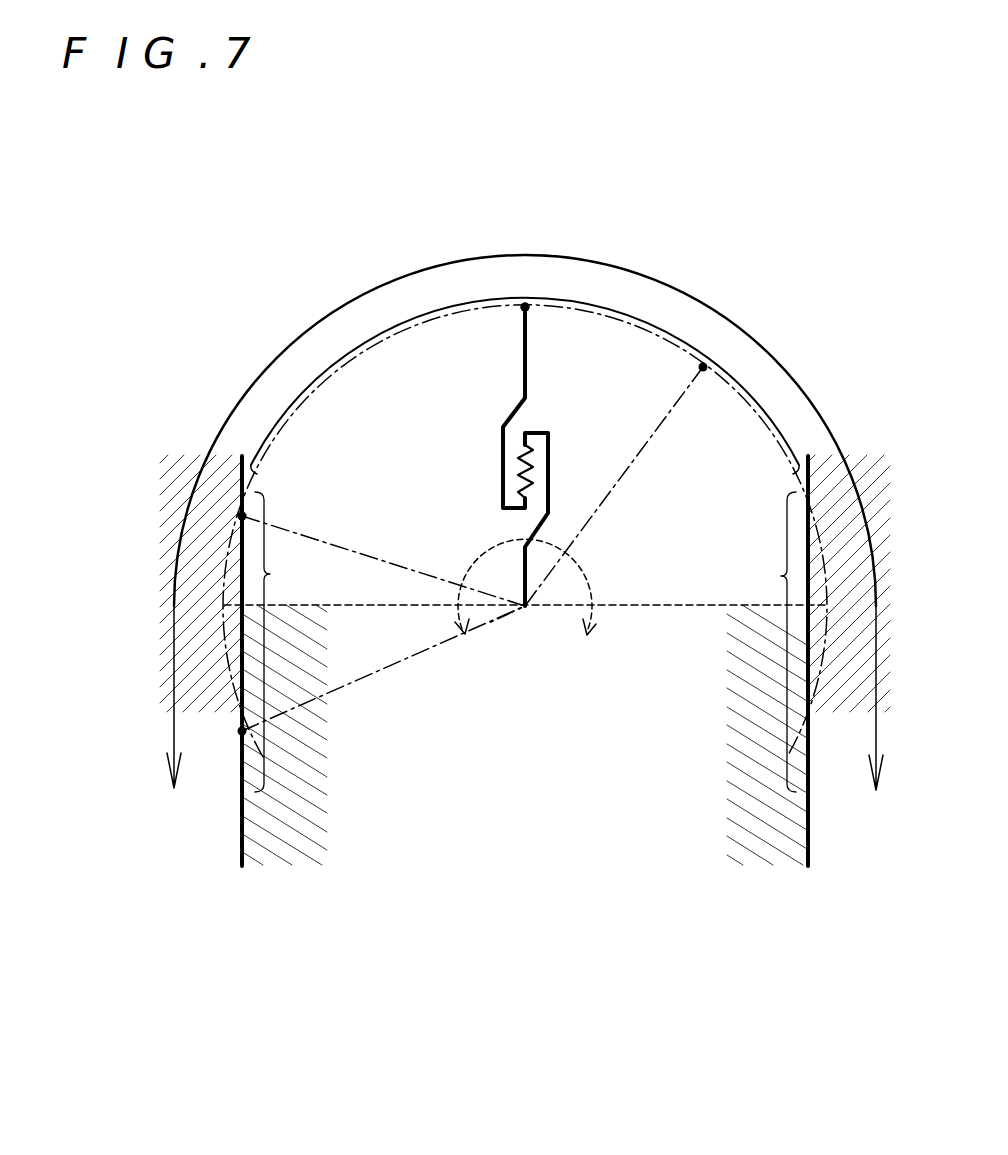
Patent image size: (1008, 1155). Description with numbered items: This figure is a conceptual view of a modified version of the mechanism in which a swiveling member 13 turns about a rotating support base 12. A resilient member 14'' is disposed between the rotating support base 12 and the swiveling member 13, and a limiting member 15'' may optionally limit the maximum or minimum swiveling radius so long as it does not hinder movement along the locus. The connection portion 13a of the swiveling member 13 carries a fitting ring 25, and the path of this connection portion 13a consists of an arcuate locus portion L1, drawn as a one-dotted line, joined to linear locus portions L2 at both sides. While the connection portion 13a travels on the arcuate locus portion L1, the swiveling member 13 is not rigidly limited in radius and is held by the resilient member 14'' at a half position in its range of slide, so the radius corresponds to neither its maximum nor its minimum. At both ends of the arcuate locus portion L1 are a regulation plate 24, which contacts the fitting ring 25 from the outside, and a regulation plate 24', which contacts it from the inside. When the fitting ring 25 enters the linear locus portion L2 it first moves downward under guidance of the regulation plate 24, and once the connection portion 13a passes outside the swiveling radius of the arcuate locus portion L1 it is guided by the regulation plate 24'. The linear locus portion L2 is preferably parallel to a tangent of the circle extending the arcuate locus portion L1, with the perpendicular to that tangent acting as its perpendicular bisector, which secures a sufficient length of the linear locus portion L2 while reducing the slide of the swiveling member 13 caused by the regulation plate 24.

The rotating support base 12 is at (525, 577).
The swiveling member 13 is at (523, 384).
The connection portion 13a is at (525, 307).
The fitting ring 25 is at (559, 258).
The resilient member 14'' is at (472, 482).
The limiting member 15'' is at (581, 510).
The regulation plate 24 is at (521, 522).
The regulation plate 24' is at (519, 725).
The arcuate locus portion L1 is at (678, 340).
The linear locus portion L2 is at (270, 574).